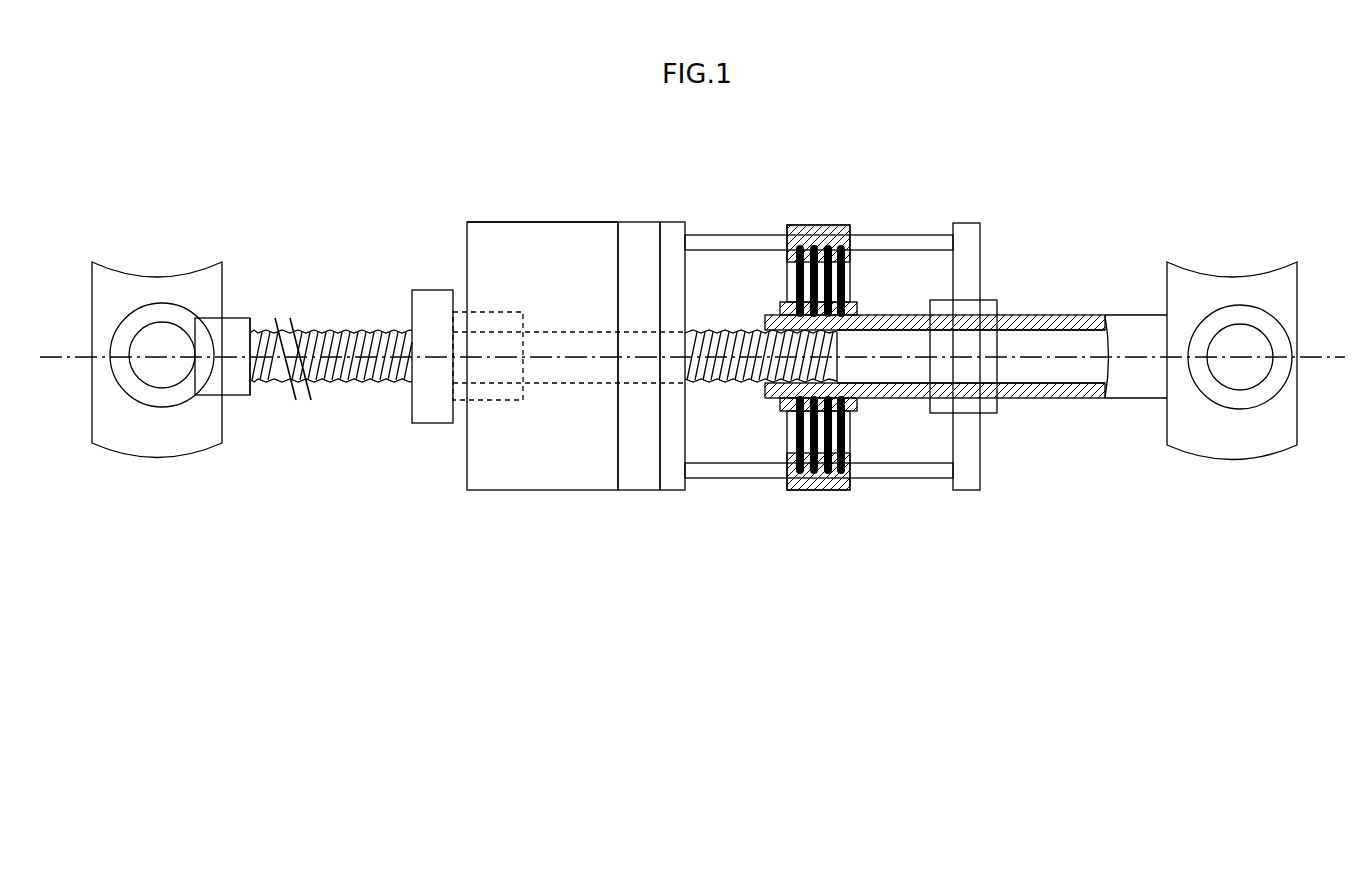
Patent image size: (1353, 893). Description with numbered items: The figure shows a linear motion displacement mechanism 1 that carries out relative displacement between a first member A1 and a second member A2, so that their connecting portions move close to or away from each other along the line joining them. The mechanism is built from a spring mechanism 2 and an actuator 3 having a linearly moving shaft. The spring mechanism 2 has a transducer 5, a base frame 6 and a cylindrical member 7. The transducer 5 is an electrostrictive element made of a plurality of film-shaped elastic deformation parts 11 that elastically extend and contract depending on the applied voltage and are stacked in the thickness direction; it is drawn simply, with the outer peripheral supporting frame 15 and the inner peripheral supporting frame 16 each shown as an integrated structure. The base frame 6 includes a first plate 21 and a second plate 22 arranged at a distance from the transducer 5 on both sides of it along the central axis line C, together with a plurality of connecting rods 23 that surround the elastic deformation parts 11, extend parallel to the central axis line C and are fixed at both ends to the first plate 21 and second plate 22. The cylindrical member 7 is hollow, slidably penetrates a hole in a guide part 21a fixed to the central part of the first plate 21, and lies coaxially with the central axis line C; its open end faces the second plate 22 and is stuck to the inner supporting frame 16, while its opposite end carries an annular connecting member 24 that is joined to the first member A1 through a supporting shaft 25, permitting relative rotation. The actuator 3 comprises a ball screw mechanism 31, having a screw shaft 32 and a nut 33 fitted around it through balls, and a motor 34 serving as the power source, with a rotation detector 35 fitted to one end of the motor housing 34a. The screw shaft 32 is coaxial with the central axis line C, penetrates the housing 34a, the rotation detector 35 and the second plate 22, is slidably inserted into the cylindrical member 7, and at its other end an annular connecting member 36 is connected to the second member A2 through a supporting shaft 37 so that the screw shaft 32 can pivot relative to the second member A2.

The linear motion displacement mechanism 1 is at (443, 143).
The spring mechanism 2 is at (718, 180).
The actuator 3 is at (413, 491).
The transducer 5 is at (851, 217).
The base frame 6 is at (985, 216).
The cylindrical member 7 is at (1077, 317).
The elastic deformation part 11 is at (787, 276).
The supporting frame 15 is at (803, 228).
The supporting frame 16 is at (858, 305).
The first plate 21 is at (975, 450).
The guide part 21a is at (998, 306).
The second plate 22 is at (673, 485).
The connecting rods 23 is at (912, 237).
The annular connecting member 24 is at (1210, 393).
The supporting shaft 25 is at (1240, 375).
The ball screw mechanism 31 is at (357, 247).
The screw shaft 32 is at (360, 330).
The nut 33 is at (423, 300).
The motor 34 is at (505, 221).
The housing 34a is at (555, 238).
The rotation detector 35 is at (640, 238).
The annular connecting member 36 is at (172, 398).
The supporting shaft 37 is at (172, 345).
The first member A1 is at (1195, 275).
The second member A2 is at (122, 290).
The central axis line C is at (1125, 365).